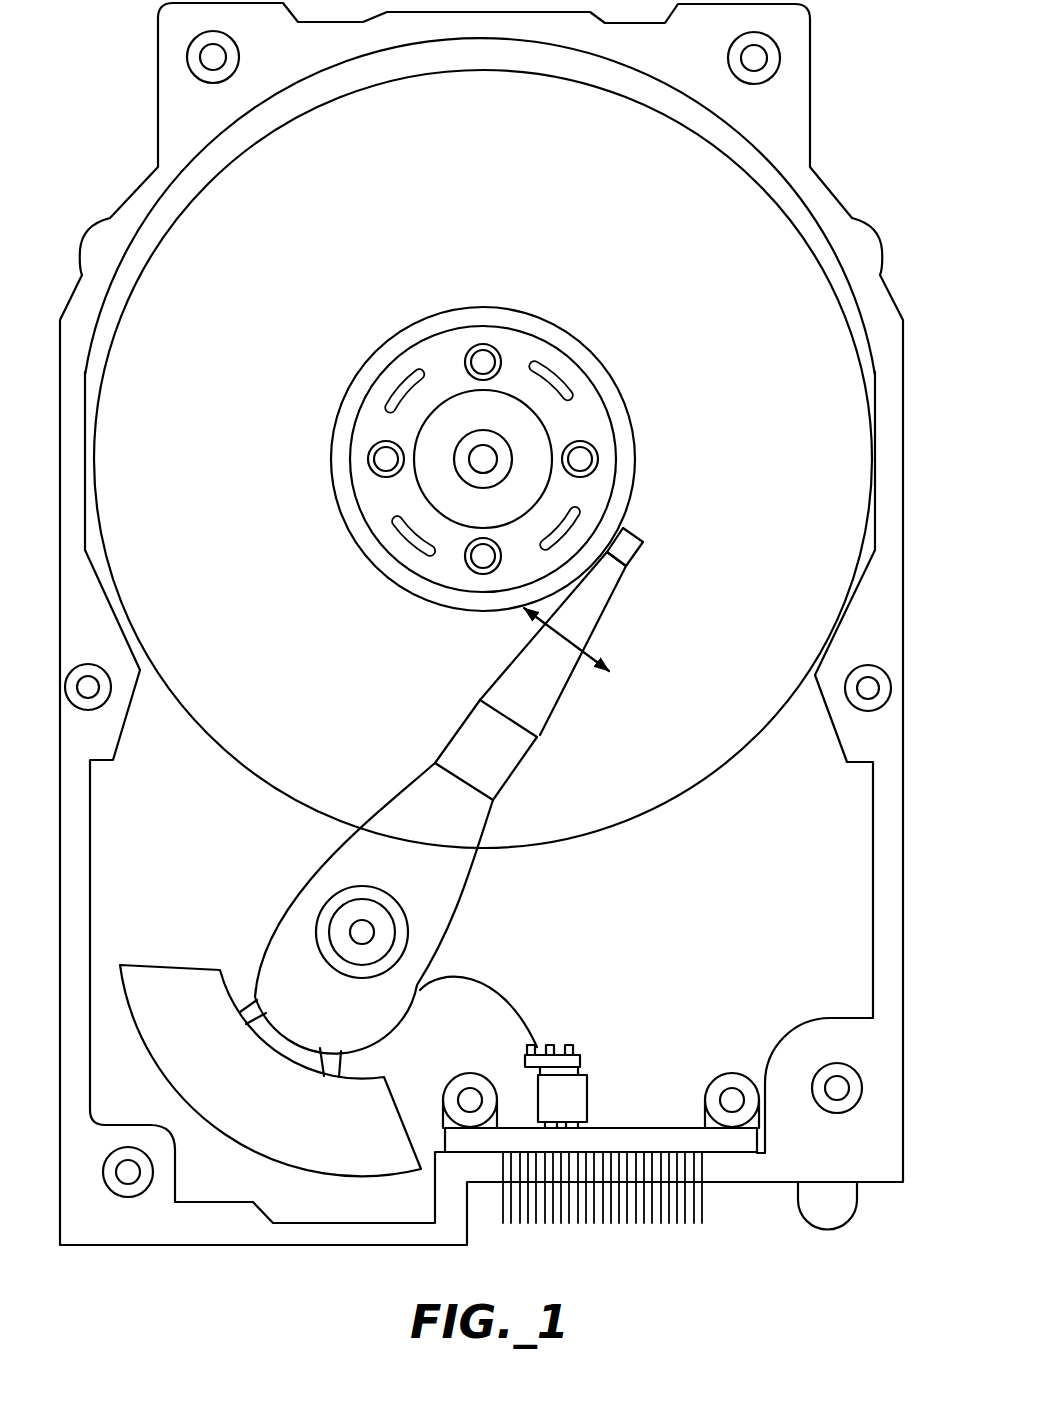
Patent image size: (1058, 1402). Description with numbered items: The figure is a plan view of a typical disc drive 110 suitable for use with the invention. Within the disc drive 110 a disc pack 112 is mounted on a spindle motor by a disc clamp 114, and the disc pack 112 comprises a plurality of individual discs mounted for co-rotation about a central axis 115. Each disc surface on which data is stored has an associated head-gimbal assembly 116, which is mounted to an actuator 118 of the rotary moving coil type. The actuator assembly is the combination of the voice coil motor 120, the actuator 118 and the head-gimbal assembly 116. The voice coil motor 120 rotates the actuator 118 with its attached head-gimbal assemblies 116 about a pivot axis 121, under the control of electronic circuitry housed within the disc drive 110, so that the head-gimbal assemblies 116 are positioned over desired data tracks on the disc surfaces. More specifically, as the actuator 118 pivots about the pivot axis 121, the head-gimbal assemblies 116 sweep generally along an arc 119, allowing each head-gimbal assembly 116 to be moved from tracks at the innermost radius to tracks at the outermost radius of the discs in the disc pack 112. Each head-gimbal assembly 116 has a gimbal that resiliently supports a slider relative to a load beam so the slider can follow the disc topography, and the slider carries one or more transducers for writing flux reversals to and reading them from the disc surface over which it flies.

The disc drive 110 is at (851, 52).
The disc pack 112 is at (516, 144).
The disc clamp 114 is at (392, 335).
The central axis 115 is at (486, 455).
The head-gimbal assembly 116 is at (648, 526).
The actuator 118 is at (519, 803).
The arc 119 is at (580, 640).
The voice coil motor 120 is at (194, 965).
The pivot axis 121 is at (362, 930).